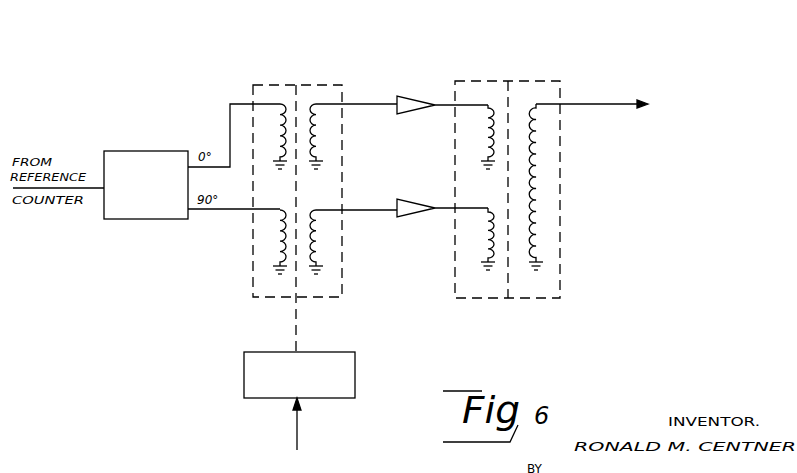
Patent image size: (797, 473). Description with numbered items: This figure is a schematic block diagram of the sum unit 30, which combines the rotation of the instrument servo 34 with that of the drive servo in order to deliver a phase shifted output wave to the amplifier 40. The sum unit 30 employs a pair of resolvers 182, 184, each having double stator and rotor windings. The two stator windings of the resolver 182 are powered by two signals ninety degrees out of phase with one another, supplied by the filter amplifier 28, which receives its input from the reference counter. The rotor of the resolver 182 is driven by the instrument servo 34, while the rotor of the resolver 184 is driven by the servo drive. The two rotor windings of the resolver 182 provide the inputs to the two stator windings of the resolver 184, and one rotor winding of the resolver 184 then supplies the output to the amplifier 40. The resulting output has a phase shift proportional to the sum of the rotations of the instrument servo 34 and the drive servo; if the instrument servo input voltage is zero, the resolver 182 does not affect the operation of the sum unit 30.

The filter amplifier 28 is at (146, 220).
The sum unit 30 is at (300, 20).
The resolver 182 is at (320, 86).
The resolver 184 is at (457, 80).
The instrument servo 34 is at (357, 384).
The amplifier 40 is at (655, 122).